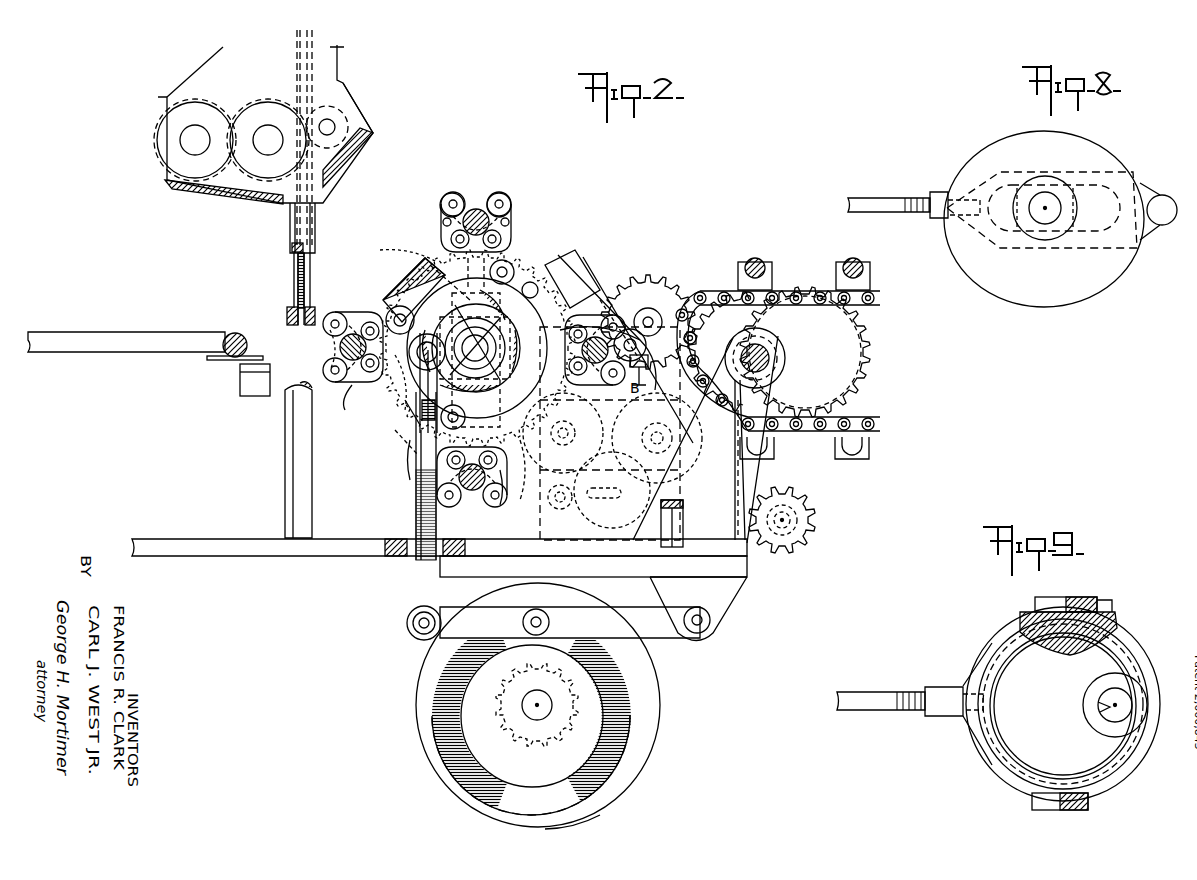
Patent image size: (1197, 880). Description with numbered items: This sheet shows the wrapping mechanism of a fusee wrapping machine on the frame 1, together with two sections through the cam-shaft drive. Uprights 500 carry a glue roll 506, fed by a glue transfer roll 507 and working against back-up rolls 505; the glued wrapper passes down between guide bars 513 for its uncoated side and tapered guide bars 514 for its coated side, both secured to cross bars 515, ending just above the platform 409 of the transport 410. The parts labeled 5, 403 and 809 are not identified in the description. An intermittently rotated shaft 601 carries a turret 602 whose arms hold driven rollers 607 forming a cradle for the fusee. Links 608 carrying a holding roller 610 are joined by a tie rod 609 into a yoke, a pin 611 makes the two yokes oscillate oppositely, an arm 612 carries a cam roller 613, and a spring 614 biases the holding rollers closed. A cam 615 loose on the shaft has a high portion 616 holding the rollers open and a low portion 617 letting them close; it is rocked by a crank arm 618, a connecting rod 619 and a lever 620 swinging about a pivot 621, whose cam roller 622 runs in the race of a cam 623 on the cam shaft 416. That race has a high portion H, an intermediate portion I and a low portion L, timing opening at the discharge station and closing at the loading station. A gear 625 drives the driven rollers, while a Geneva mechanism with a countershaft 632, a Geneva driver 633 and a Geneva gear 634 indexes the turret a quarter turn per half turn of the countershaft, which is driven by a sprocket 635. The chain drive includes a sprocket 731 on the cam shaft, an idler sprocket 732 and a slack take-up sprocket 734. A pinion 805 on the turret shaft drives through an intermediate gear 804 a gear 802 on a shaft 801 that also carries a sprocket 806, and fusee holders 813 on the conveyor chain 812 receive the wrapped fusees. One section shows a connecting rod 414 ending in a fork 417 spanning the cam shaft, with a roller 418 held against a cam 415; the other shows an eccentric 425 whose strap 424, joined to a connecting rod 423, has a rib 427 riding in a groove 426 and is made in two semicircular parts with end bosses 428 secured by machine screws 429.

In FIG. 2, the frame 1 is at (222, 556).
In FIG. 2, the strip guide 5 is at (332, 53).
In FIG. 2, the feed bar 403 is at (126, 342).
In FIG. 2, the platform 409 is at (262, 362).
In FIG. 2, the transport 410 is at (257, 380).
In FIG. 8, the connecting rod 414 is at (870, 190).
In FIG. 8, the cam 415 is at (1040, 308).
In FIG. 2, the cam shaft 416 is at (540, 722).
In FIG. 8, the cam shaft 416 is at (1045, 225).
In FIG. 9, the cam shaft 416 is at (1110, 708).
In FIG. 8, the fork 417 is at (946, 190).
In FIG. 8, the roller 418 is at (1160, 224).
In FIG. 9, the connecting rod 423 is at (855, 705).
In FIG. 9, the strap 424 is at (980, 642).
In FIG. 9, the eccentric 425 is at (1063, 706).
In FIG. 9, the groove 426 is at (995, 770).
In FIG. 9, the rib 427 is at (1035, 620).
In FIG. 9, the end bosses 428 is at (1075, 588).
In FIG. 9, the machine screws 429 is at (1097, 605).
In FIG. 2, the uprights 500 is at (290, 230).
In FIG. 2, the back-up rolls 505 is at (348, 120).
In FIG. 2, the glue roll 506 is at (262, 122).
In FIG. 2, the glue transfer roll 507 is at (198, 125).
In FIG. 2, the guide bars 513 is at (308, 272).
In FIG. 2, the guide bars 514 is at (294, 268).
In FIG. 2, the cross bars 515 is at (312, 308).
In FIG. 2, the shaft 601 is at (476, 360).
In FIG. 2, the turret 602 is at (535, 295).
In FIG. 2, the driven roller 607 is at (360, 385).
In FIG. 2, the links 608 is at (442, 202).
In FIG. 2, the tie rod 609 is at (445, 222).
In FIG. 2, the holding roller 610 is at (500, 195).
In FIG. 2, the pin 611 is at (476, 238).
In FIG. 2, the arm 612 is at (490, 272).
In FIG. 2, the cam roller 613 is at (390, 328).
In FIG. 2, the spring 614 is at (469, 336).
In FIG. 2, the cam 615 is at (432, 262).
In FIG. 2, the high portion 616 is at (410, 275).
In FIG. 2, the low portion 617 is at (495, 500).
In FIG. 2, the crank arm 618 is at (425, 313).
In FIG. 2, the connecting rod 619 is at (418, 512).
In FIG. 2, the lever 620 is at (432, 608).
In FIG. 2, the pivot 621 is at (698, 630).
In FIG. 2, the cam roller 622 is at (540, 612).
In FIG. 2, the cam 623 is at (661, 725).
In FIG. 2, the gear 625 is at (405, 440).
In FIG. 2, the countershaft 632 is at (622, 315).
In FIG. 2, the Geneva driver 633 is at (568, 285).
In FIG. 2, the Geneva gear 634 is at (415, 455).
In FIG. 2, the sprocket 635 is at (618, 280).
In FIG. 2, the sprocket 731 is at (528, 738).
In FIG. 2, the idler sprocket 732 is at (790, 552).
In FIG. 2, the slack take-up sprocket 734 is at (530, 490).
In FIG. 2, the shaft 801 is at (758, 345).
In FIG. 2, the gear 802 is at (832, 360).
In FIG. 2, the intermediate gear 804 is at (505, 505).
In FIG. 2, the pinion 805 is at (405, 420).
In FIG. 2, the sprocket 806 is at (828, 384).
In FIG. 2, the frame 809 is at (672, 492).
In FIG. 2, the conveyor chain 812 is at (862, 310).
In FIG. 2, the fusee holders 813 is at (700, 330).
In FIG. 2, the intermediate portion I is at (428, 705).
In FIG. 2, the low portion L is at (620, 668).
In FIG. 2, the high portion H is at (555, 825).